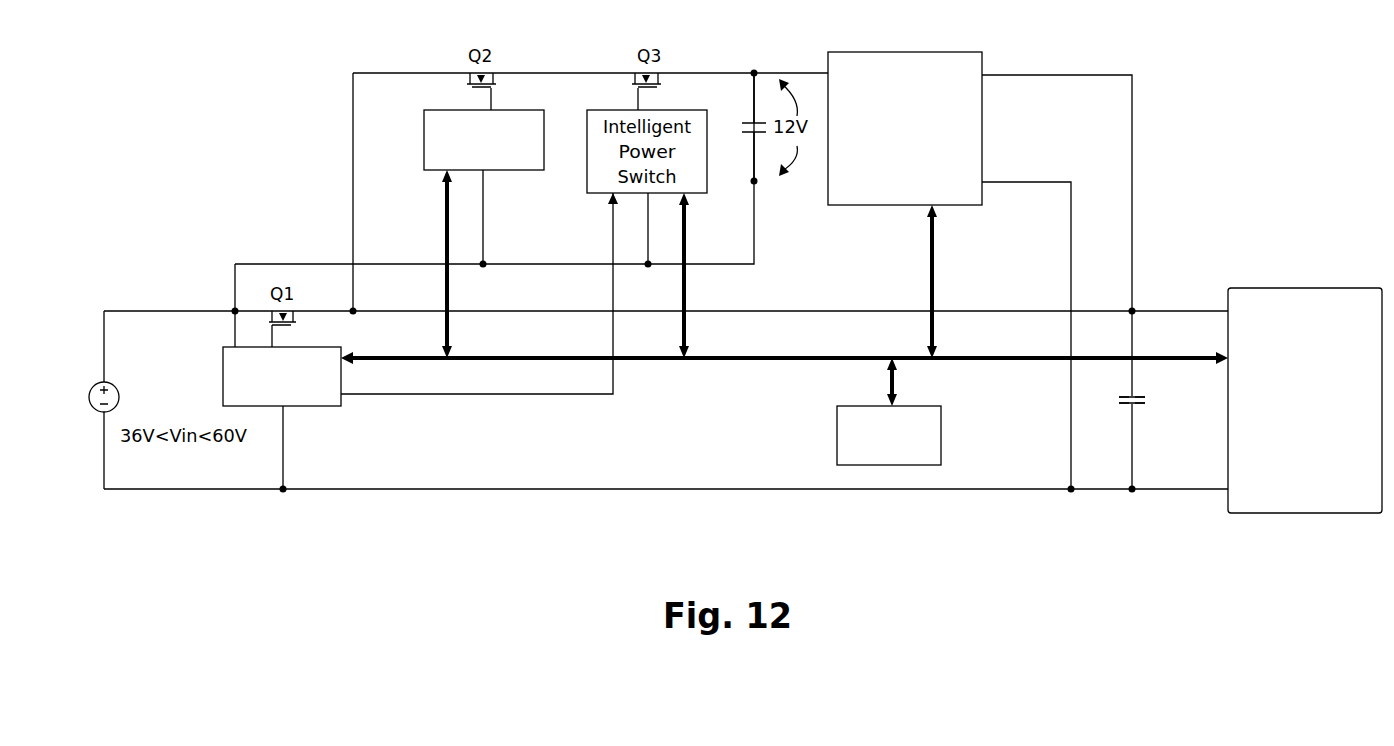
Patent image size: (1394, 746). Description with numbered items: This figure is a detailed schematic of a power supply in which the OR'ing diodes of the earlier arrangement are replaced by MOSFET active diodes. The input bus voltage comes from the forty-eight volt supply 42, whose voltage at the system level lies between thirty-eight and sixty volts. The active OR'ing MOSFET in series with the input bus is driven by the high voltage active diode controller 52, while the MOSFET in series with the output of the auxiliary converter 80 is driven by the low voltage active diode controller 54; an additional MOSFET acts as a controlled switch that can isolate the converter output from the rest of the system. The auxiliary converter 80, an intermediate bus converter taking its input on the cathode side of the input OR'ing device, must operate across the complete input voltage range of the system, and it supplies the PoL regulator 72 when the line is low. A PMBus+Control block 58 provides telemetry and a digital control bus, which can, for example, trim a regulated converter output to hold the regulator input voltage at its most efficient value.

The 48-V supply 42 is at (92, 385).
The high voltage active diode controller 52 is at (223, 365).
The low voltage active diode controller 54 is at (432, 127).
The PMBus+Control building block 58 is at (837, 410).
The auxiliary converter 80 is at (895, 52).
The PoL regulator 72 is at (1298, 290).